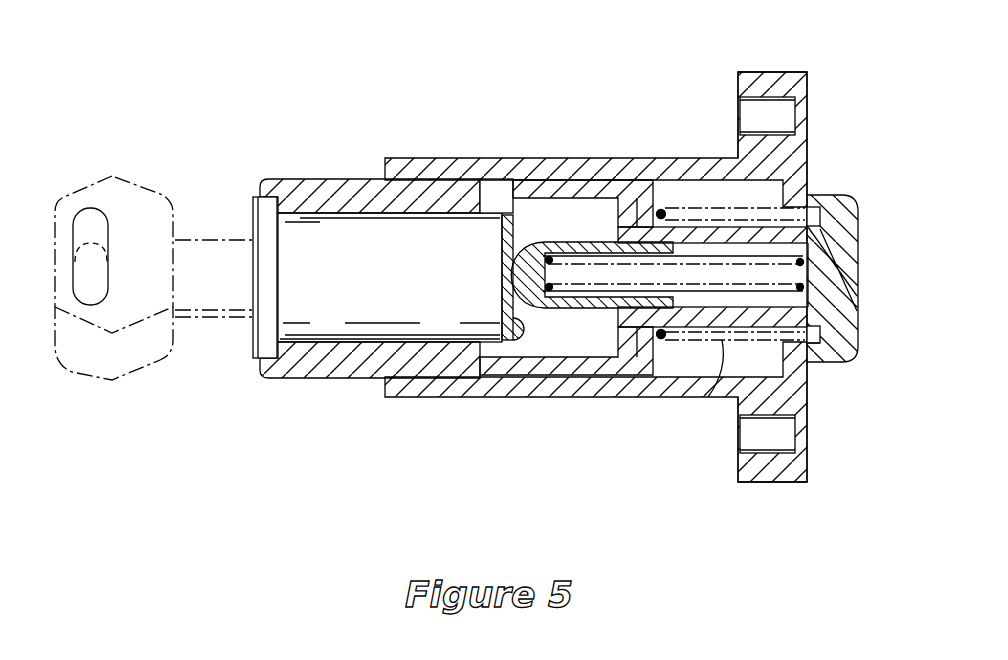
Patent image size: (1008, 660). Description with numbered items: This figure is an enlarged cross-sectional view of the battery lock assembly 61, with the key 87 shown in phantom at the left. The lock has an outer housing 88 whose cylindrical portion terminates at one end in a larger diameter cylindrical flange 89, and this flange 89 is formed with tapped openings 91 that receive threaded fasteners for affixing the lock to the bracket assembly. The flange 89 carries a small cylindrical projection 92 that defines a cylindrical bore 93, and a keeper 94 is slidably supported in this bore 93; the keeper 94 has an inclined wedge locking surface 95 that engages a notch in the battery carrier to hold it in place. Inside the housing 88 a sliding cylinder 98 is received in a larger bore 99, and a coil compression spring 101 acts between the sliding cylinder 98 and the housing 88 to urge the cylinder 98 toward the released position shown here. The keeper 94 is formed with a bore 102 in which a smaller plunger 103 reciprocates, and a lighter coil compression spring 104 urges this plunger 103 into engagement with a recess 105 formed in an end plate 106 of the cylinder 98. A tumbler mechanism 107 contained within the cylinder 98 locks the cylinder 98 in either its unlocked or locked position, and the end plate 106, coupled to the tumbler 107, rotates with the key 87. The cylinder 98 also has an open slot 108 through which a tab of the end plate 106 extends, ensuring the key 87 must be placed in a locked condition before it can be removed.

The lock assembly 61 is at (562, 130).
The key 87 is at (158, 188).
The outer housing 88 is at (512, 398).
The cylindrical flange 89 is at (768, 78).
The tapped openings 91 is at (785, 118).
The cylindrical projection 92 is at (832, 190).
The cylindrical bore 93 is at (818, 220).
The keeper 94 is at (837, 322).
The inclined wedge locking surface 95 is at (838, 264).
The sliding cylinder 98 is at (347, 380).
The larger bore 99 is at (673, 368).
The coil compression spring 101 is at (708, 398).
The bore 102 is at (808, 300).
The smaller plunger 103 is at (557, 312).
The coil compression spring 104 is at (761, 330).
The recess 105 is at (505, 278).
The end plate 106 is at (503, 309).
The tumbler mechanism 107 is at (345, 235).
The open slot 108 is at (498, 197).